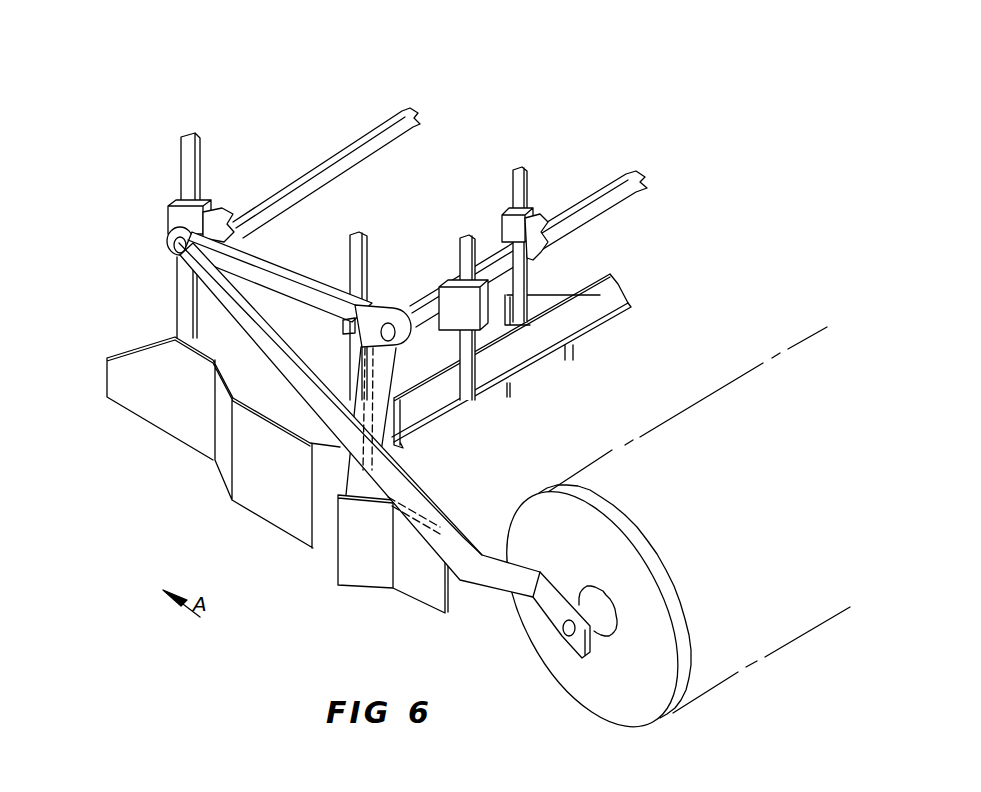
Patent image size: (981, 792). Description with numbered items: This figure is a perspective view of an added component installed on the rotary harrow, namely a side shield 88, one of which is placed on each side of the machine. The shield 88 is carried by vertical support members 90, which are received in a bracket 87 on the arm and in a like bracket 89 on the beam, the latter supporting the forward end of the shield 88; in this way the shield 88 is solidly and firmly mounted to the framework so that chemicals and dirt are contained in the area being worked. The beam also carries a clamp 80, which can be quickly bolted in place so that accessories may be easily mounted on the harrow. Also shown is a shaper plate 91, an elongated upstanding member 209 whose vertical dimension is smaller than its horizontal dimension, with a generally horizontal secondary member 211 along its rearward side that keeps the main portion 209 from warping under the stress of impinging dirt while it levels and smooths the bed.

The clamp 80 is at (458, 316).
The bracket 87 is at (172, 225).
The side shield 88 is at (148, 397).
The bracket 89 is at (449, 296).
The vertical support member 90 is at (187, 162).
The shaper plate 91 is at (656, 322).
The upstanding member 209 is at (598, 299).
The secondary member 211 is at (593, 323).